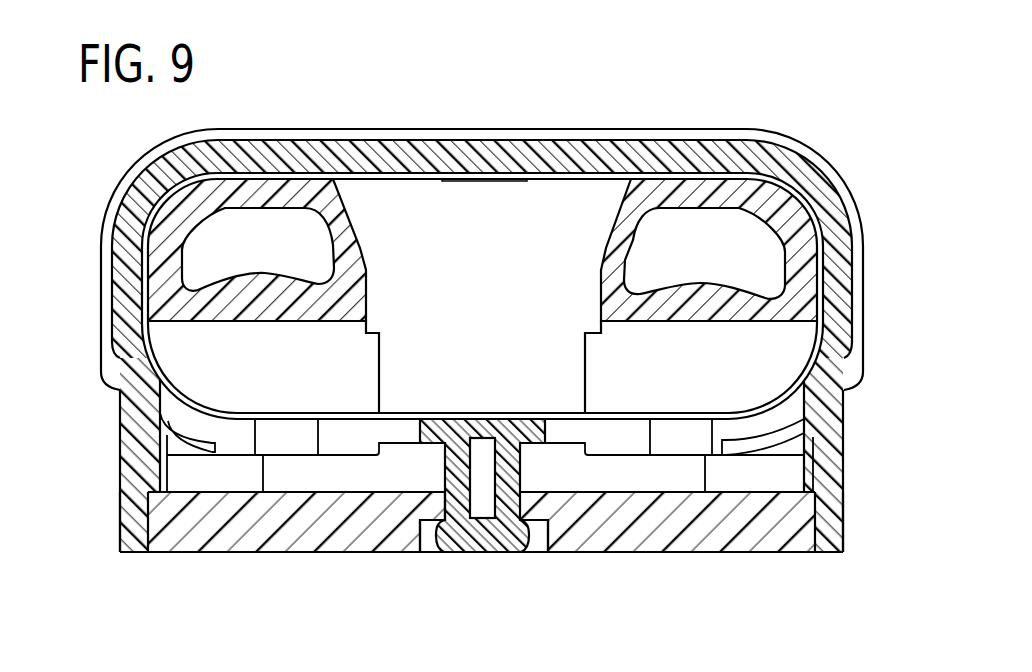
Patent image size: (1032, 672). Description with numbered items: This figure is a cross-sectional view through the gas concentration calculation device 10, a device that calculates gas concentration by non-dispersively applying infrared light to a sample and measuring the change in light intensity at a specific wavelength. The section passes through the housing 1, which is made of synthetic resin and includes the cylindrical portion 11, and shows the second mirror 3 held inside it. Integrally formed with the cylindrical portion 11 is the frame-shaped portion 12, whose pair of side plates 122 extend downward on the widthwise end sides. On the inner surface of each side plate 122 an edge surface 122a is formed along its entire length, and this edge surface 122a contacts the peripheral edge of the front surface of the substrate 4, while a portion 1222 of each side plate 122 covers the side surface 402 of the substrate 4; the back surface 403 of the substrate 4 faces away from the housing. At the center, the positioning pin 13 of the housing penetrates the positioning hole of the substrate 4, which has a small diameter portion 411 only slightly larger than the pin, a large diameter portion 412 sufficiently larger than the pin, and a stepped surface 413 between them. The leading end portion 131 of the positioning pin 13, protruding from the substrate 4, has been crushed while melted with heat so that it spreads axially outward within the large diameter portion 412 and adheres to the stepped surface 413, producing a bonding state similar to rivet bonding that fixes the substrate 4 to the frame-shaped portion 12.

The housing 1 is at (476, 126).
The second mirror 3 is at (573, 220).
The substrate 4 is at (481, 559).
The gas concentration calculation device 10 is at (481, 335).
The cylindrical portion 11 is at (838, 285).
The frame-shaped portion 12 is at (851, 426).
The positioning pin 13 is at (430, 536).
The side plate 122 is at (145, 463).
The edge surface 122a is at (148, 493).
The leading end portion of positioning pin 131 is at (473, 530).
The side surface of substrate 402 is at (140, 517).
The back surface of substrate 403 is at (712, 552).
The small diameter portion 411 is at (512, 500).
The large diameter portion 412 is at (538, 532).
The stepped surface 413 is at (427, 527).
The portion for covering side surface of substrate 1222 is at (135, 526).